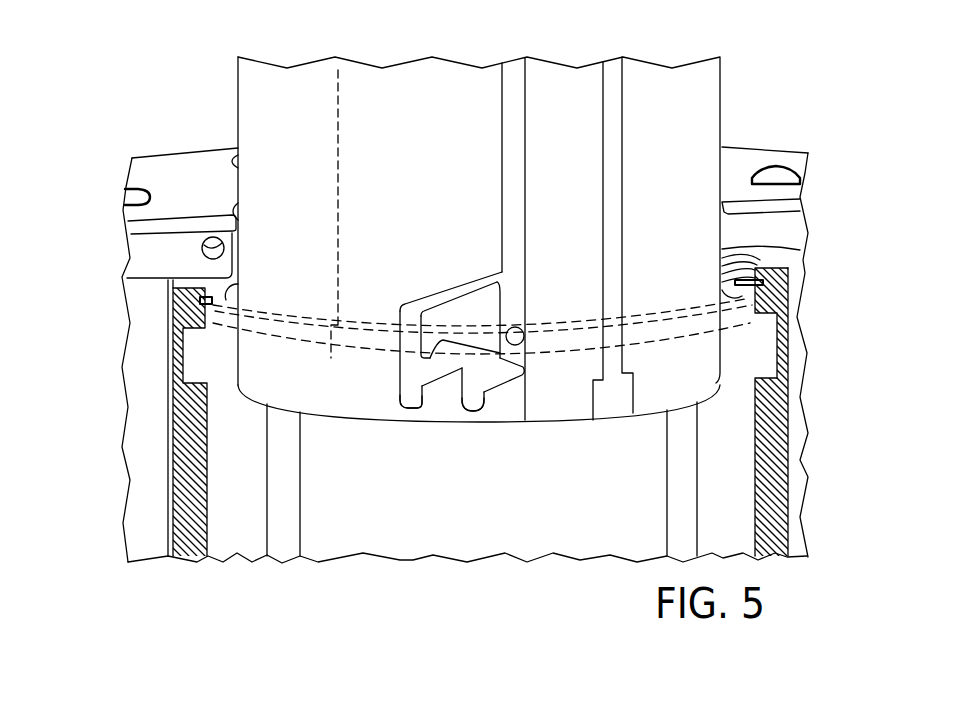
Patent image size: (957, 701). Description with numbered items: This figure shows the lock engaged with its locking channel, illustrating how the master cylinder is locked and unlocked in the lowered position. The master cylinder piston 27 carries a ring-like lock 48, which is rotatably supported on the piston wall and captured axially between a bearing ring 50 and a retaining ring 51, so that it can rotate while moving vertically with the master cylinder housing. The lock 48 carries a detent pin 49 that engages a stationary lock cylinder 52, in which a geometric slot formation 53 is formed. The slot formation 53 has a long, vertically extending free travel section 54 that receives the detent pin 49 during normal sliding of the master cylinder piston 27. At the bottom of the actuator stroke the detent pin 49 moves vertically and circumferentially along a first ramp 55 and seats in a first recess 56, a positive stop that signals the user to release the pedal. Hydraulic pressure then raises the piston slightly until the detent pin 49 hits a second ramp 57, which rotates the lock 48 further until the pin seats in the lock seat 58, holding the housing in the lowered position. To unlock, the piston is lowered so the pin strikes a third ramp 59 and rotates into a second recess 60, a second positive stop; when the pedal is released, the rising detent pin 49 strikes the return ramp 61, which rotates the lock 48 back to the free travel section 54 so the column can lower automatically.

The master cylinder piston 27 is at (156, 162).
The ring-like lock 48 is at (235, 332).
The detent pin 49 is at (520, 326).
The bearing ring 50 is at (197, 370).
The retaining ring 51 is at (755, 272).
The lock cylinder 52 is at (713, 80).
The slot formation 53 is at (510, 72).
The free travel section 54 is at (515, 165).
The first ramp 55 is at (513, 372).
The first recess 56 is at (480, 406).
The second ramp 57 is at (480, 348).
The lock seat 58 is at (437, 320).
The third ramp 59 is at (435, 388).
The second recess 60 is at (410, 408).
The return ramp 61 is at (482, 286).